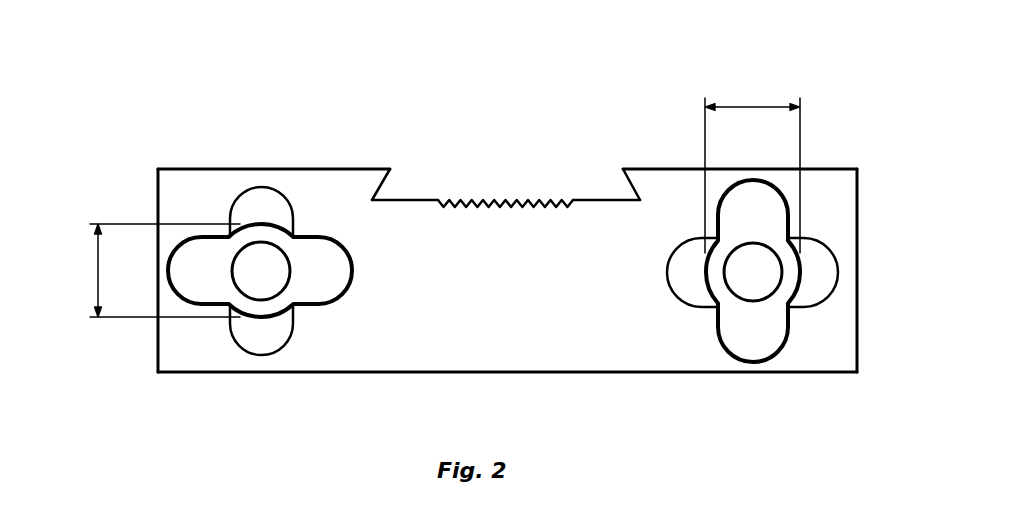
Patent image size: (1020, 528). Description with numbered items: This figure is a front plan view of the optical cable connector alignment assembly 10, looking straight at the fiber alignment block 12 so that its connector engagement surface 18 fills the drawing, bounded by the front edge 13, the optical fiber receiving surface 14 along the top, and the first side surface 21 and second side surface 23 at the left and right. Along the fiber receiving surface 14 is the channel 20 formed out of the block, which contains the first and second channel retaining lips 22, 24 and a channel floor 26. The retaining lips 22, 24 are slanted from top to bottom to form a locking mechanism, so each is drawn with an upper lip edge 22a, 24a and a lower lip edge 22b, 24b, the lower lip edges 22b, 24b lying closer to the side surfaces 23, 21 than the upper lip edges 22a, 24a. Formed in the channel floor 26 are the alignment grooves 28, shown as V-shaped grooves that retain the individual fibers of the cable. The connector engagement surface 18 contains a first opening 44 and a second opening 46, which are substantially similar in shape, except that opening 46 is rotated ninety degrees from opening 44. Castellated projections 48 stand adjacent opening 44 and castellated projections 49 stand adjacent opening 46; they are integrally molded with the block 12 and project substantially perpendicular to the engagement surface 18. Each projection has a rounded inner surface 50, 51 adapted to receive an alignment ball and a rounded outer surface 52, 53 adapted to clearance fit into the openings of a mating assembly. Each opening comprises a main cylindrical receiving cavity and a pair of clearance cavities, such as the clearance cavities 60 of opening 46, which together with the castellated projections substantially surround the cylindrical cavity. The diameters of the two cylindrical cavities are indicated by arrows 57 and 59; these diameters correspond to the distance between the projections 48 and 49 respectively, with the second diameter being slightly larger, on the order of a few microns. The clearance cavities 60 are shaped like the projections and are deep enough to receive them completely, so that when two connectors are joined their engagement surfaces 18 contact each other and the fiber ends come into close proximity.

The optical cable connector alignment assembly 10 is at (808, 60).
The fiber alignment block 12 is at (198, 168).
The front edge 13 is at (832, 353).
The optical fiber receiving surface 14 is at (337, 168).
The connector engagement surface 18 is at (490, 330).
The channel 20 is at (469, 197).
The first side surface 21 is at (158, 187).
The first channel retaining lip 22 is at (639, 199).
The upper lip edge 22a is at (639, 199).
The lower lip edge 22b is at (639, 199).
The second side surface 23 is at (857, 186).
The second channel retaining lip 24 is at (373, 199).
The upper lip edge 24a is at (373, 199).
The lower lip edge 24b is at (373, 199).
The channel floor 26 is at (310, 308).
The alignment grooves 28 is at (523, 200).
The first opening 44 is at (257, 187).
The second opening 46 is at (837, 243).
The castellated projections 48 is at (283, 208).
The castellated projections 49 is at (690, 285).
The rounded inner surface 50 is at (260, 315).
The rounded inner surface 51 is at (792, 290).
The rounded outer surface 52 is at (224, 330).
The rounded outer surface 53 is at (802, 240).
The arrows indicating diameter d1 57 is at (98, 270).
The arrows indicating diameter d2 59 is at (748, 106).
The clearance cavities 60 is at (748, 360).